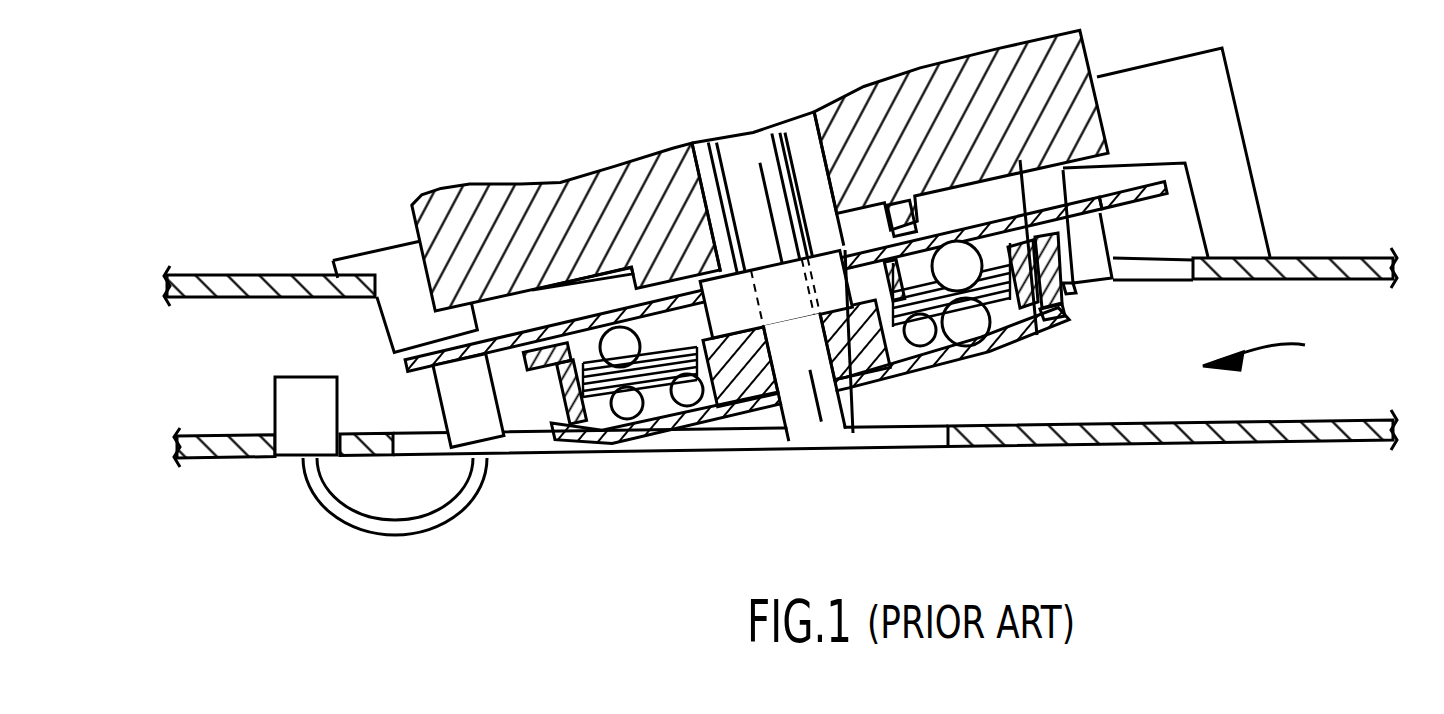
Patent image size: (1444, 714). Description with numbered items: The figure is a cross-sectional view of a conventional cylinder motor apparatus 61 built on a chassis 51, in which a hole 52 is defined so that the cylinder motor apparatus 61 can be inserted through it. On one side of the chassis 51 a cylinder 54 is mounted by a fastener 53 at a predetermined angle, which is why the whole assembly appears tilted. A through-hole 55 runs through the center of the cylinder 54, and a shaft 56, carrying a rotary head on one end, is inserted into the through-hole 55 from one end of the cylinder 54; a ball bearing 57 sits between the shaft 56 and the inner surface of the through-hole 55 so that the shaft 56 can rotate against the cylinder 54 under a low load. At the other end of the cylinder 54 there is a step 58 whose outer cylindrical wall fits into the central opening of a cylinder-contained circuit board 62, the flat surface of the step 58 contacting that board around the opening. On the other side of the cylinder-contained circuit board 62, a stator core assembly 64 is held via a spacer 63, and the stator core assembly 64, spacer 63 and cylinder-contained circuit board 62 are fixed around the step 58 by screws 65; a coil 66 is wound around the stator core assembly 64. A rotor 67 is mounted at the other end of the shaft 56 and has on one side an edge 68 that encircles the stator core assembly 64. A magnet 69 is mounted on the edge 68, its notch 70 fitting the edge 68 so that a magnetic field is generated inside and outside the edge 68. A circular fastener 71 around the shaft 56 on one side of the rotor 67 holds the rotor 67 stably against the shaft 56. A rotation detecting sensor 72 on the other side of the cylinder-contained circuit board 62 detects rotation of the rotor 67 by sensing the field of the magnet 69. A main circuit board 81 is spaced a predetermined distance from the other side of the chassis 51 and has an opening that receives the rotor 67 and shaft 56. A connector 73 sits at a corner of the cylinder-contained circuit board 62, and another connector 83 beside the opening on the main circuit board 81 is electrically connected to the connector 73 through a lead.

The chassis 51 is at (1343, 255).
The hole 52 is at (915, 432).
The fastener 53 is at (1240, 110).
The cylinder 54 is at (1087, 50).
The through-hole 55 is at (803, 112).
The shaft 56 is at (752, 140).
The ball bearing 57 is at (692, 147).
The step 58 is at (658, 305).
The cylinder motor apparatus 61 is at (1272, 346).
The cylinder-contained circuit board 62 is at (1150, 203).
The spacer 63 is at (893, 232).
The stator core assembly 64 is at (1037, 332).
The screws 65 is at (940, 332).
The coil 66 is at (1023, 325).
The rotor 67 is at (883, 380).
The edge 68 is at (1058, 312).
The magnet 69 is at (1075, 290).
The notch 70 is at (1020, 160).
The circular fastener 71 is at (740, 385).
The rotation detecting sensor 72 is at (1106, 234).
The connector 73 is at (500, 410).
The main circuit board 81 is at (1143, 440).
The connector 83 is at (338, 405).